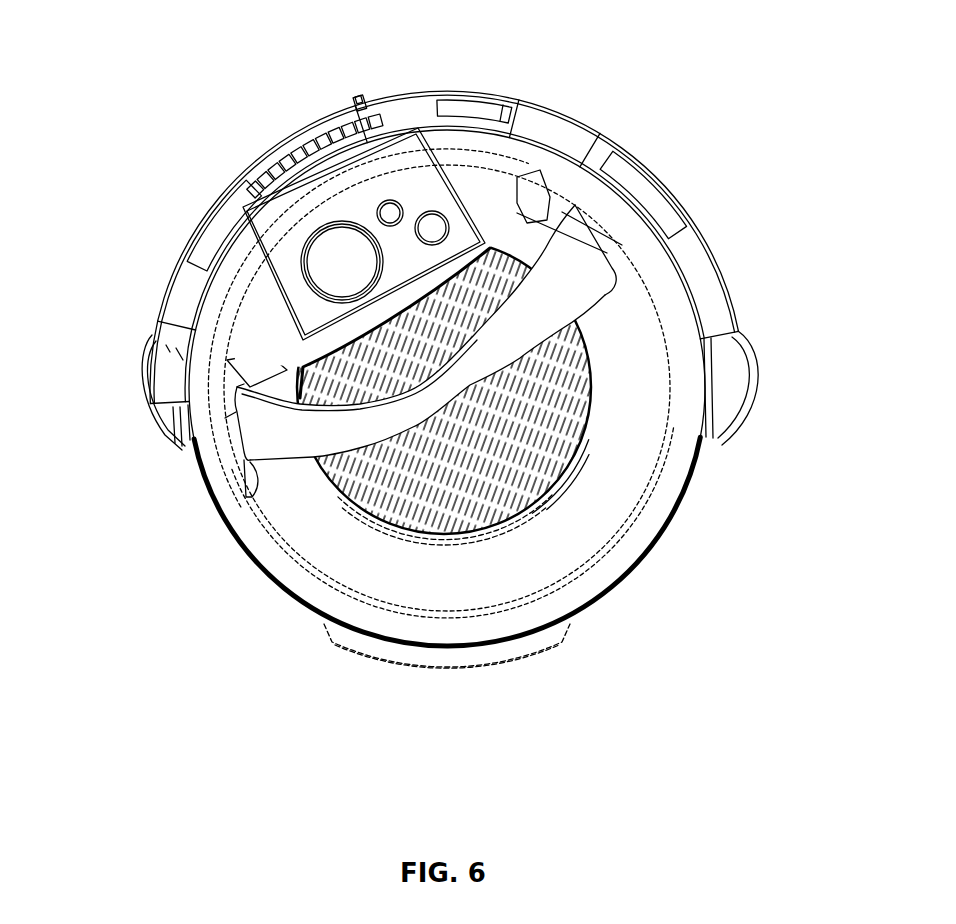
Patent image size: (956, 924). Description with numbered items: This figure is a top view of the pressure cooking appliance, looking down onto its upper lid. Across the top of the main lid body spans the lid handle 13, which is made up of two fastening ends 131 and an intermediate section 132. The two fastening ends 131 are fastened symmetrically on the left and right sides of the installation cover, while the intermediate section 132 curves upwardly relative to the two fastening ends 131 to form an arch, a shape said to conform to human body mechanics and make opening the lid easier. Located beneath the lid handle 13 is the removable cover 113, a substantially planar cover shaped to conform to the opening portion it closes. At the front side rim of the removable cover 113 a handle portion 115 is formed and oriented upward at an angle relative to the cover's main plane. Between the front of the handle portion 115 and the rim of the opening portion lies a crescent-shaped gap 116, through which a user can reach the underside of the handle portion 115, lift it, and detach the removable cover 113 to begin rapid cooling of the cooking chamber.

The lid handle 13 is at (315, 418).
The fastening ends 131 is at (255, 433).
The intermediate section 132 is at (437, 387).
The removable cover 113 is at (567, 400).
The handle portion 115 is at (466, 531).
The gap 116 is at (520, 517).